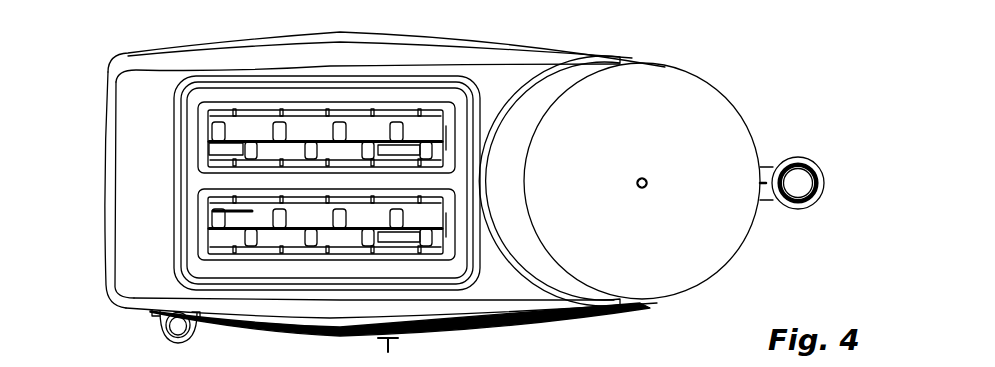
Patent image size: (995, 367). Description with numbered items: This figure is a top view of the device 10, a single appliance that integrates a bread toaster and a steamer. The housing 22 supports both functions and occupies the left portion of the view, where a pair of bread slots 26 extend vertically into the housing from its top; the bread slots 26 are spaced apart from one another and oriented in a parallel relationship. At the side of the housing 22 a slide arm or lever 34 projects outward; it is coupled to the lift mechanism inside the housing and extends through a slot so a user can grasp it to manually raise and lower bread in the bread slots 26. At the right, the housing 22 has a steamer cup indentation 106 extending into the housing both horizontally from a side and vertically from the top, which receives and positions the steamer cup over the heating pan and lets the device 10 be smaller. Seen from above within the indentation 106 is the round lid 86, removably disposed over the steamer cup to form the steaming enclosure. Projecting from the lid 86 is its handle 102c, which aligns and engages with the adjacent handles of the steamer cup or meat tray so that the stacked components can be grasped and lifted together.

The device 10 is at (727, 330).
The housing 22 is at (103, 107).
The bread slots 26 is at (284, 320).
The slide arm or lever 34 is at (168, 333).
The lid 86 is at (703, 83).
The handle of the lid 102c is at (797, 156).
The steamer cup indentation 106 is at (552, 95).